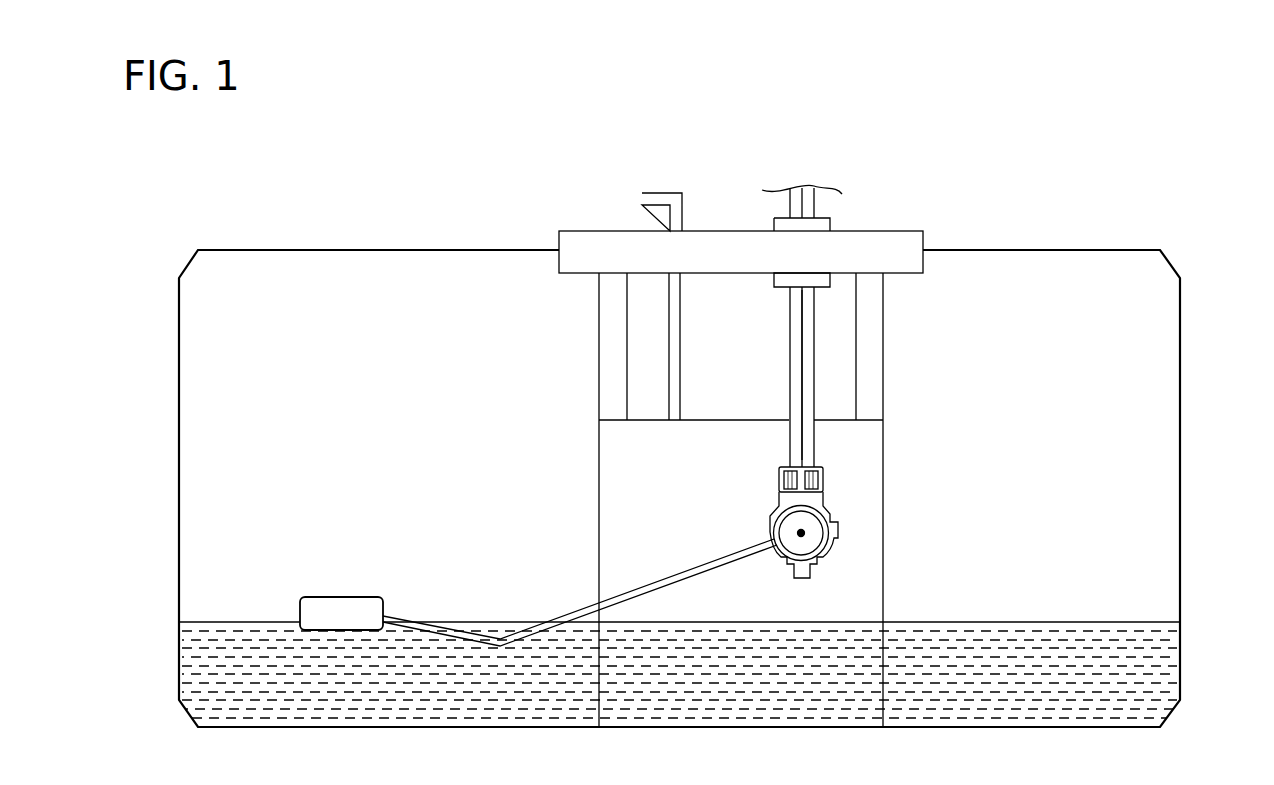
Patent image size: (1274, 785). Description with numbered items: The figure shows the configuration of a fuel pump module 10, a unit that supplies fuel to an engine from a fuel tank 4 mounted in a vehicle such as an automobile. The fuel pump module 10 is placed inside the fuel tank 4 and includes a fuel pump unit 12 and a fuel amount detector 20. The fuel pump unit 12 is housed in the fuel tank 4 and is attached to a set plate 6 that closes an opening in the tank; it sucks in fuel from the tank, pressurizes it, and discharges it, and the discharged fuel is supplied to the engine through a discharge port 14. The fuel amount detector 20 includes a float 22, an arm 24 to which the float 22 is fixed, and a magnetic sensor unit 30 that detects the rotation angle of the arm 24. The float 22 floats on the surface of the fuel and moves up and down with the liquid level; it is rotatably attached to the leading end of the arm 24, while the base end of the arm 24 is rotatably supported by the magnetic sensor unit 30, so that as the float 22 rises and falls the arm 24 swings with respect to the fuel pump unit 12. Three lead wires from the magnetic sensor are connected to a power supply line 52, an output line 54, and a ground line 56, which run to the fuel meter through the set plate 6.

The fuel tank 4 is at (1180, 522).
The set plate 6 is at (895, 240).
The fuel pump module 10 is at (520, 105).
The fuel pump unit 12 is at (620, 434).
The discharge port 14 is at (650, 194).
The fuel amount detector 20 is at (826, 487).
The float 22 is at (340, 603).
The arm 24 is at (640, 587).
The magnetic sensor unit 30 is at (822, 470).
The power supply line 52 is at (789, 349).
The output line 54 is at (802, 333).
The ground line 56 is at (814, 367).